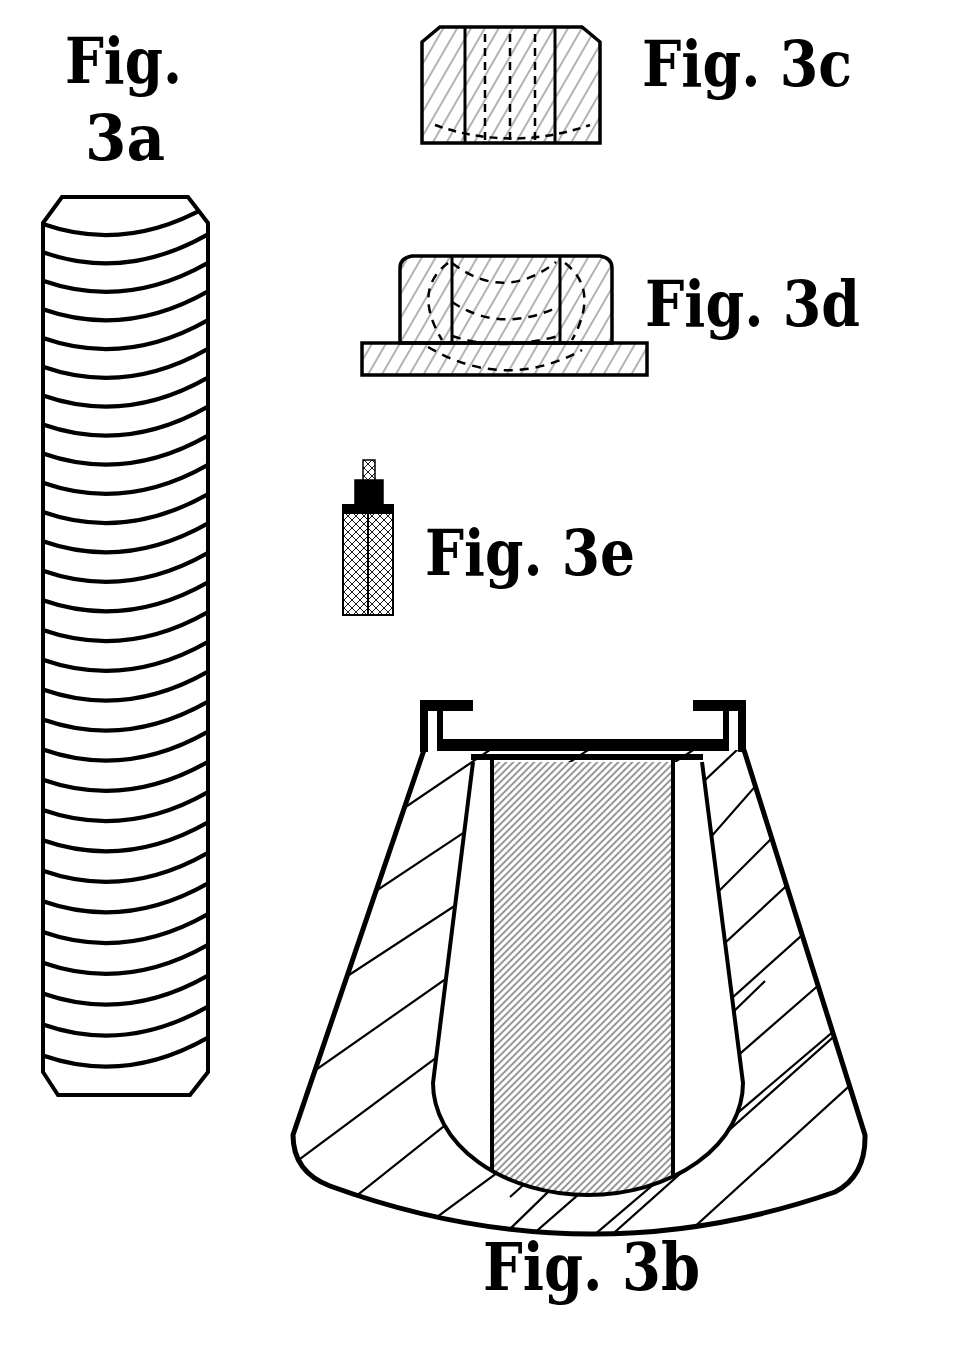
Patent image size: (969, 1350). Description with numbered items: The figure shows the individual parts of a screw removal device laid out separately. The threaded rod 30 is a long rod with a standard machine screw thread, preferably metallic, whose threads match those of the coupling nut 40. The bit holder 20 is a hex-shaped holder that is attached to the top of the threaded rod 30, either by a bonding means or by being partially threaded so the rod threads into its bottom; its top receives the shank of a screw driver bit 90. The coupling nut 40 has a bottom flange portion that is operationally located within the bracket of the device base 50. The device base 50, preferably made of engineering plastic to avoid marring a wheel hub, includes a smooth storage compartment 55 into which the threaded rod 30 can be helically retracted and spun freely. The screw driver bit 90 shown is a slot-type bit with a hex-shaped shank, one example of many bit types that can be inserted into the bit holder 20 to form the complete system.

In FIG. 3C, the bit holder 20 is at (552, 153).
In FIG. 3A, the threaded rod 30 is at (222, 305).
In FIG. 3D, the coupling nut 40 is at (562, 402).
In FIG. 3B, the device base 50 is at (516, 947).
In FIG. 3B, the storage compartment 55 is at (676, 1083).
In FIG. 3E, the screw driver bit 90 is at (420, 498).